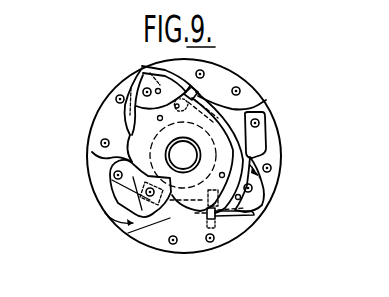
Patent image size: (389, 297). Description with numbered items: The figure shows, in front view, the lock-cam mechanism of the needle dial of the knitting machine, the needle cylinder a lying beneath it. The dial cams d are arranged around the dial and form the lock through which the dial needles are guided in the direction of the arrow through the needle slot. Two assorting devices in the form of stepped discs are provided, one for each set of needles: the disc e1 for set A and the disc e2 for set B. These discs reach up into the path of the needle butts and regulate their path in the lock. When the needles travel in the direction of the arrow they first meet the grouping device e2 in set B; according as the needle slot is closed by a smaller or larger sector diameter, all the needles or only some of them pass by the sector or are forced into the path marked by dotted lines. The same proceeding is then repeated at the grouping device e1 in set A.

The needle cylinder a is at (185, 250).
The set A is at (159, 122).
The stepped disc (assorting device for set A) e1 is at (158, 70).
The dial cams d is at (106, 103).
The stepped disc (assorting device for set B) e2 is at (235, 213).
The set B is at (254, 255).